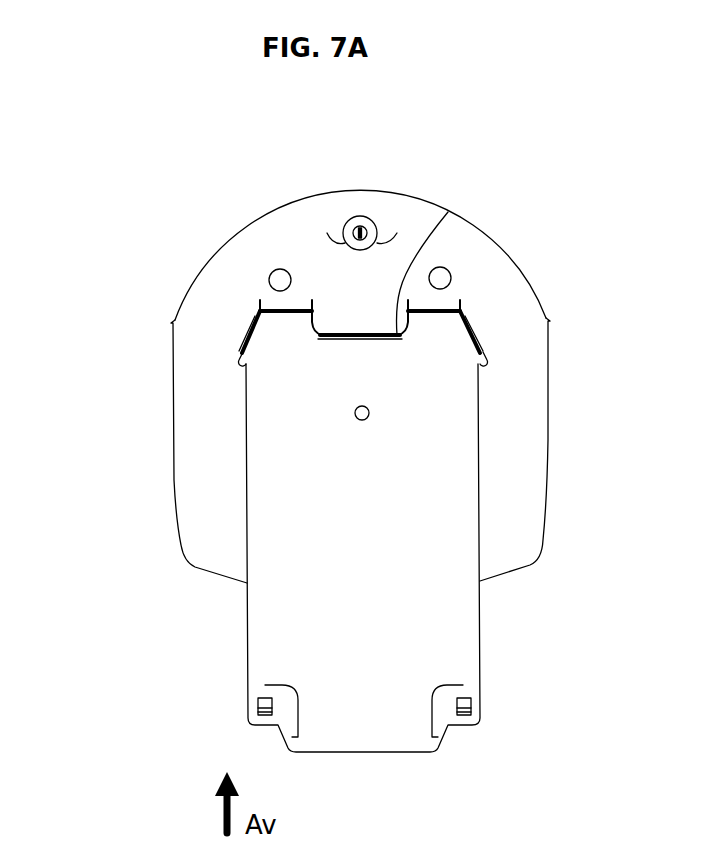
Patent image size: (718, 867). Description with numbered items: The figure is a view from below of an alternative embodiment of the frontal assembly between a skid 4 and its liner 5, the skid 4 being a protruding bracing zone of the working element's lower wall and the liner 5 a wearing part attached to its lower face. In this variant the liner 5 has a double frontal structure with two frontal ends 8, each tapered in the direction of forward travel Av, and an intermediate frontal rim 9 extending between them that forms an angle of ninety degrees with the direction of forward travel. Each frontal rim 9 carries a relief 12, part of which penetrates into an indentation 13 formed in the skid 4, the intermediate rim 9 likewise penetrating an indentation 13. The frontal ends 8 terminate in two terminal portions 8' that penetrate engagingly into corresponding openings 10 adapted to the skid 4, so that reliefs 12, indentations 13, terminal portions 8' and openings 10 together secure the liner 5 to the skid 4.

The skid 4 is at (493, 528).
The liner 5 is at (435, 638).
The frontal end 8 is at (360, 435).
The terminal portion 8' is at (259, 229).
The frontal rim 9 is at (249, 338).
The opening 10 is at (448, 296).
The relief 12 is at (478, 348).
The indentation 13 is at (343, 333).